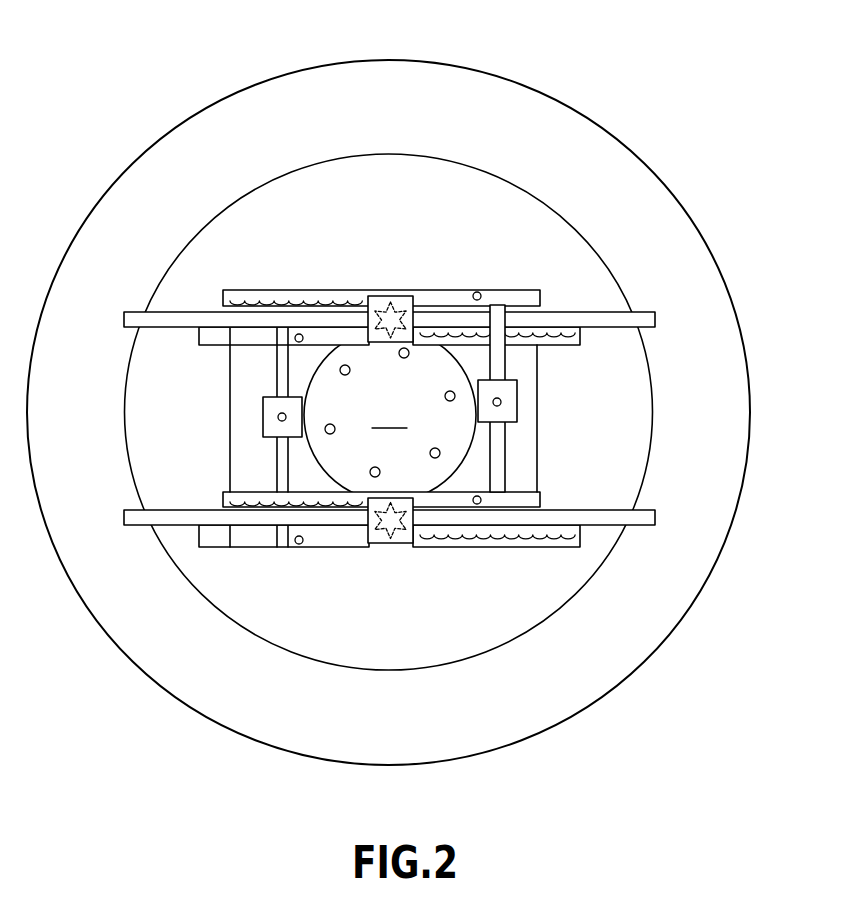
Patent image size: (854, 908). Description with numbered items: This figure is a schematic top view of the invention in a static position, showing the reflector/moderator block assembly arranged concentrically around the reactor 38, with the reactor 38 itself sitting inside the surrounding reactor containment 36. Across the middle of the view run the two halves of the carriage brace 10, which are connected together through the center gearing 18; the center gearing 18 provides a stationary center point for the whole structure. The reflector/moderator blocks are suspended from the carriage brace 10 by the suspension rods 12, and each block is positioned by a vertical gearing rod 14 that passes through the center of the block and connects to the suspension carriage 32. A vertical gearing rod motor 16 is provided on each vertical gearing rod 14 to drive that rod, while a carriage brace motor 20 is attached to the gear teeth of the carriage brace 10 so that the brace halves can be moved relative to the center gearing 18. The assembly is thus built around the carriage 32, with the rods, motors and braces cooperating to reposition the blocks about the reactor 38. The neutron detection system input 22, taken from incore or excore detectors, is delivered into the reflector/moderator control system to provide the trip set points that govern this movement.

The carriage brace 10 is at (124, 317).
The suspension rods 12 is at (295, 338).
The vertical gearing rod 14 is at (278, 417).
The vertical gearing rod motor 16 is at (262, 404).
The center gearing 18 is at (385, 306).
The carriage brace motor 20 is at (403, 296).
The neutron detection system input 22 is at (346, 365).
The carriage 32 is at (238, 338).
The reactor containment 36 is at (488, 97).
The reactor 38 is at (390, 415).